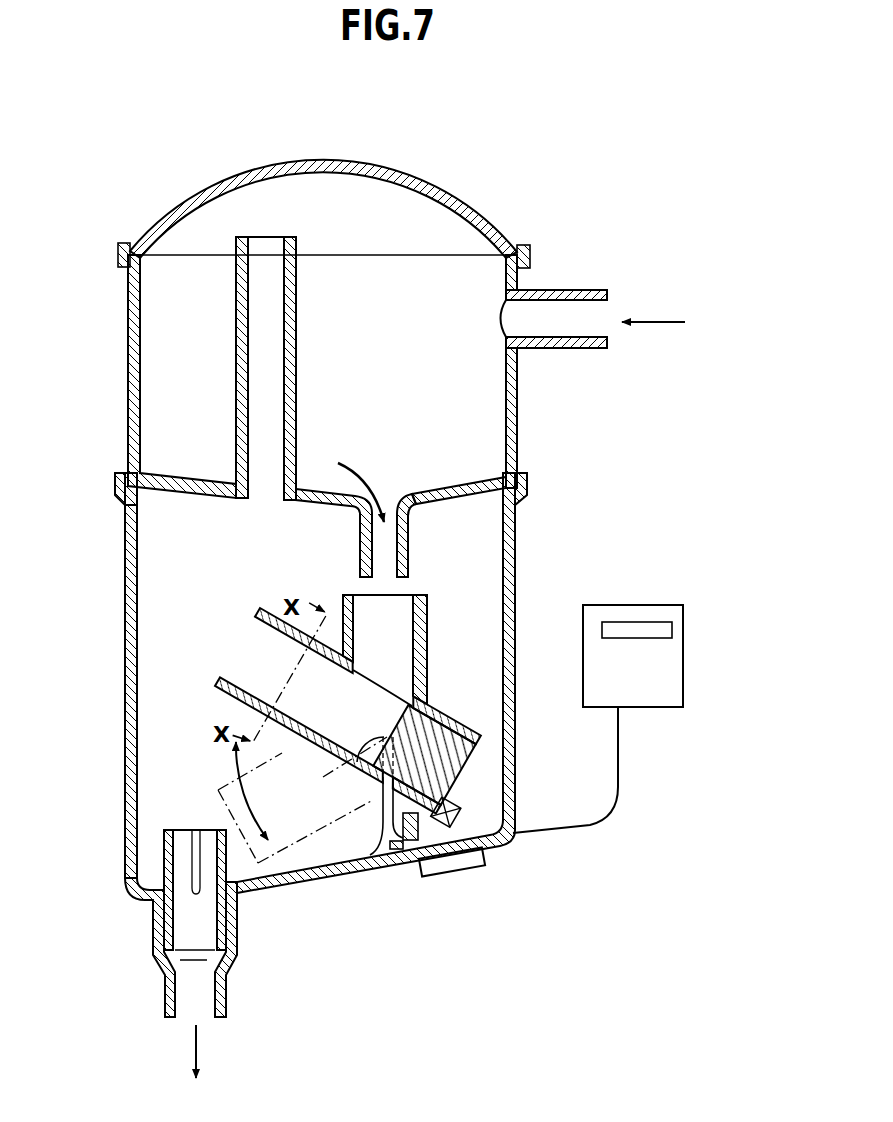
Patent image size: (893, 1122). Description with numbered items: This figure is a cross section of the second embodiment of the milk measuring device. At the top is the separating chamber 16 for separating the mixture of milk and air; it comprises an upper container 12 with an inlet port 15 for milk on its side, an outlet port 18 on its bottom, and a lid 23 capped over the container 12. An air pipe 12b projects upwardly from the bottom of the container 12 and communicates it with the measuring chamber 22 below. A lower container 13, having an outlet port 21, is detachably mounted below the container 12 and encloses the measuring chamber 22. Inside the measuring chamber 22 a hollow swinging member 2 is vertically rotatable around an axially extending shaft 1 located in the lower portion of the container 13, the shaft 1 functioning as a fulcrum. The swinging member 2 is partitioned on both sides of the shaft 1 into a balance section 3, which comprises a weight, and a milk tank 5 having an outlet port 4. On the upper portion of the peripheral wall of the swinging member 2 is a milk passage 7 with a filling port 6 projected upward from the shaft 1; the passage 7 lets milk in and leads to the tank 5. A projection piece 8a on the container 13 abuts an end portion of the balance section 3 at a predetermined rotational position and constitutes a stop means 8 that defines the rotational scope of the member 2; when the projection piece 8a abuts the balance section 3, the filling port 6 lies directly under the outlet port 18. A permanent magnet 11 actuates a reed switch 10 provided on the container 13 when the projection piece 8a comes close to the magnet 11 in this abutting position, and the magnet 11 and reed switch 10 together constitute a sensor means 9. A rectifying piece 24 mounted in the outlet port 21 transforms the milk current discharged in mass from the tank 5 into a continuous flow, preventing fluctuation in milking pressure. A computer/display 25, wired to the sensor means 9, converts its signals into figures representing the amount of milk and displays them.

The shaft 1 is at (302, 800).
The swinging member 2 is at (437, 700).
The balance section 3 is at (455, 737).
The outlet port 4 is at (240, 656).
The milk tank 5 is at (250, 697).
The filling port 6 is at (368, 600).
The milk passage 7 is at (410, 640).
The stop means 8 is at (440, 863).
The projection piece 8a is at (377, 847).
The sensor means 9 is at (475, 831).
The reed switch 10 is at (478, 868).
The permanent magnet 11 is at (460, 804).
The container 12 is at (517, 420).
The air pipe 12b is at (297, 355).
The container 13 is at (517, 545).
The inlet port 15 is at (598, 318).
The separating chamber 16 is at (135, 356).
The outlet port 18 is at (385, 556).
The outlet port 21 is at (190, 992).
The measuring chamber 22 is at (130, 578).
The lid 23 is at (395, 170).
The rectifying piece 24 is at (166, 846).
The computer/display 25 is at (655, 606).